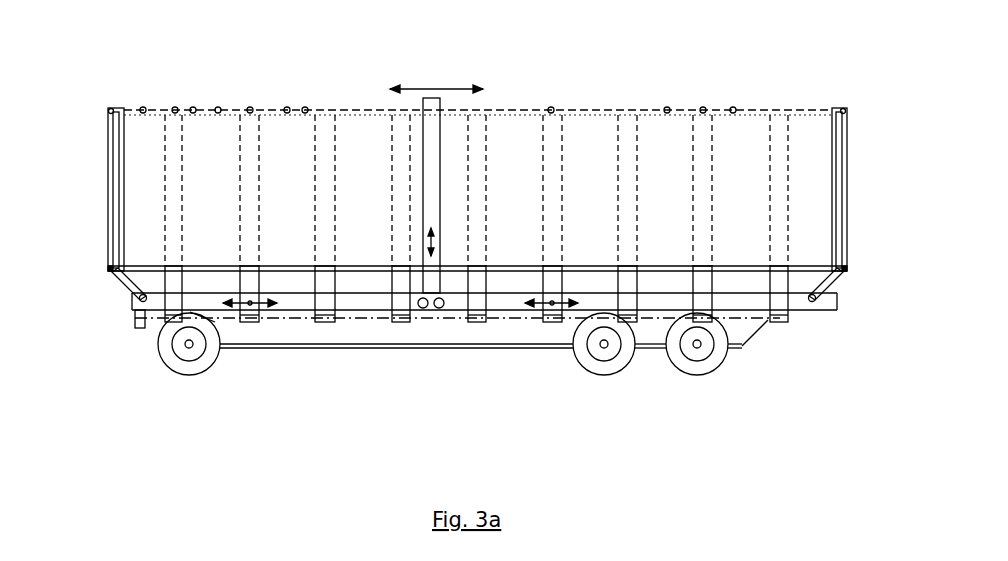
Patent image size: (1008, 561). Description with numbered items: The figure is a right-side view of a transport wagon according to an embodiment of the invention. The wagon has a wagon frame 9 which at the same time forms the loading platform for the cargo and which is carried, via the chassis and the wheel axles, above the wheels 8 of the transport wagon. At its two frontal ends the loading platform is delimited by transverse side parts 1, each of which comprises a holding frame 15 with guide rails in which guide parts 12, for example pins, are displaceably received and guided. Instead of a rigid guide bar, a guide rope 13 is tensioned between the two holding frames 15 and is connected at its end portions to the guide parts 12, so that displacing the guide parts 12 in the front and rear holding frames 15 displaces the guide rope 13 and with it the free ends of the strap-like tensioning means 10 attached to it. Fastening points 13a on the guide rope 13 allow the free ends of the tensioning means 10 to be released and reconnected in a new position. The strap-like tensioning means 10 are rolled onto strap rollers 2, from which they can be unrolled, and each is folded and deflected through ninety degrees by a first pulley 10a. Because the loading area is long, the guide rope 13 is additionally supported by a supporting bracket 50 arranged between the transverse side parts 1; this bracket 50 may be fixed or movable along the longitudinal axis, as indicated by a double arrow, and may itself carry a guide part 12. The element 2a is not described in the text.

The transverse side part 1 is at (110, 172).
The strap roller 2 is at (345, 348).
The frame centerline 2a is at (368, 320).
The wheel 8 is at (187, 368).
The wagon frame 9 is at (518, 300).
The strap-like tensioning means 10 is at (345, 175).
The first pulley 10a is at (287, 108).
The guide part 12 is at (107, 105).
The guide rope 13 is at (585, 108).
The fastening point 13a is at (218, 108).
The holding frame 15 is at (112, 218).
The supporting bracket 50 is at (433, 140).